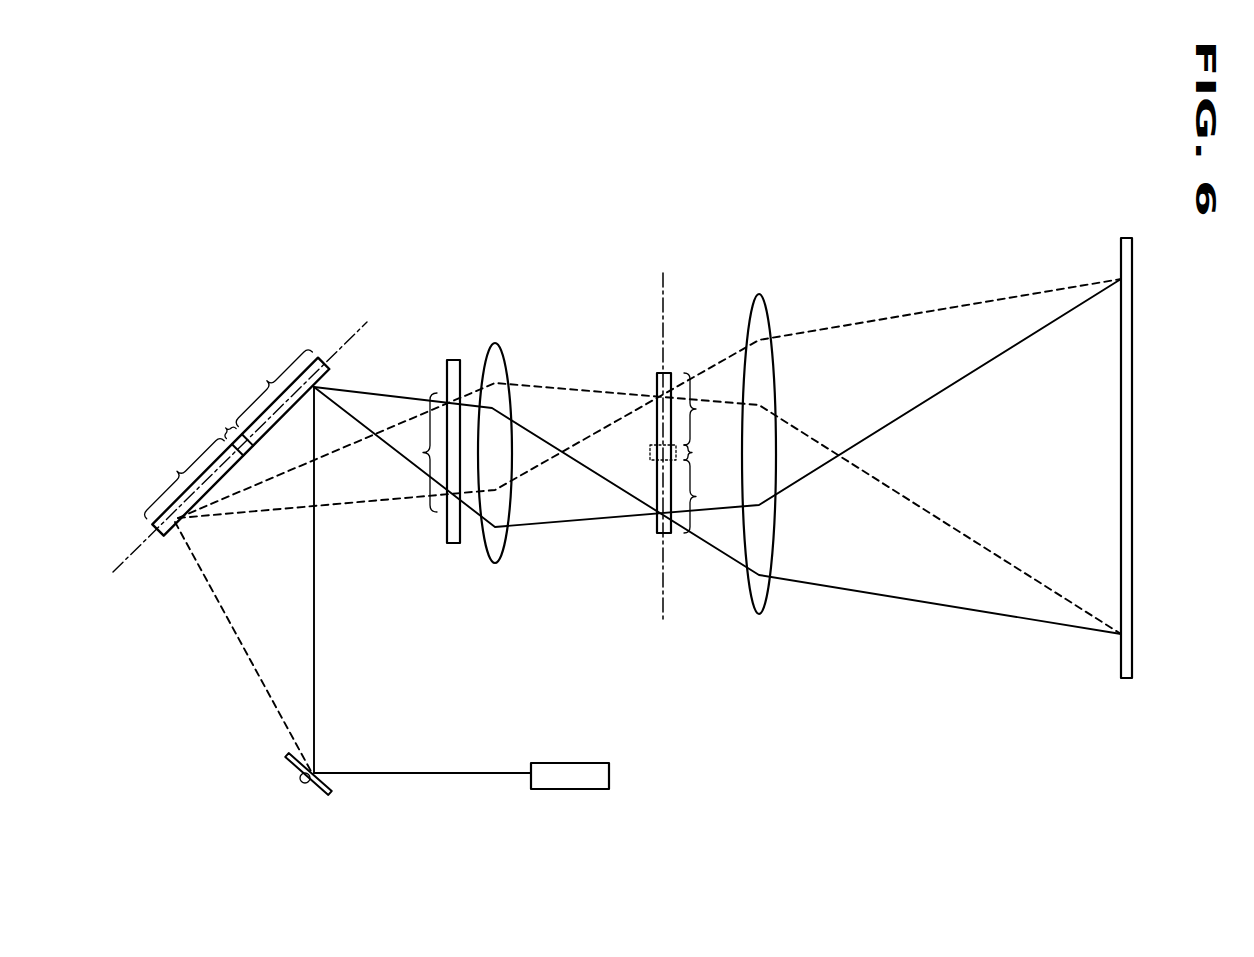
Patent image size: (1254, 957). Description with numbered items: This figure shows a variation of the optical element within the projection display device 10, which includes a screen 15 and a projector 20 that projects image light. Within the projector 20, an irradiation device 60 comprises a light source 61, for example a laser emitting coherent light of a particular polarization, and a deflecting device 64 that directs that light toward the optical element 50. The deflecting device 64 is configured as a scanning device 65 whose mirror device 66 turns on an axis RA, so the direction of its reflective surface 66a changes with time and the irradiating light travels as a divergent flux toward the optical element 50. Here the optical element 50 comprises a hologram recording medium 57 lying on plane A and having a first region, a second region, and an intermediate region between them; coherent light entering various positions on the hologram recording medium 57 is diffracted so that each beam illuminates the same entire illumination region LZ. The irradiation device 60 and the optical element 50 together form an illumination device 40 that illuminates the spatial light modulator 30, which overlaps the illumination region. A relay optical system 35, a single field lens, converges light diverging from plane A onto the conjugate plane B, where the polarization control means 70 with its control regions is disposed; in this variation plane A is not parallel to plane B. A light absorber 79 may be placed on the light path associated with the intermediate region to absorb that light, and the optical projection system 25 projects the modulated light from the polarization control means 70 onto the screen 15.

The projection display device 10 is at (874, 180).
The screen 15 is at (1123, 232).
The projector 20 is at (662, 225).
The optical projection system 25 is at (757, 290).
The spatial light modulator 30 is at (452, 352).
The relay optical system 35 is at (492, 338).
The illumination device 40 is at (207, 648).
The optical element 50 is at (254, 442).
The hologram recording medium 57 is at (322, 377).
The irradiation device 60 is at (419, 823).
The light source 61 is at (569, 780).
The deflecting device 64 is at (327, 811).
The scanning device 65 is at (327, 811).
The mirror device 66 is at (327, 811).
The reflective surface 66a is at (333, 790).
The polarization control means 70 is at (673, 360).
The light absorber 79 is at (245, 452).